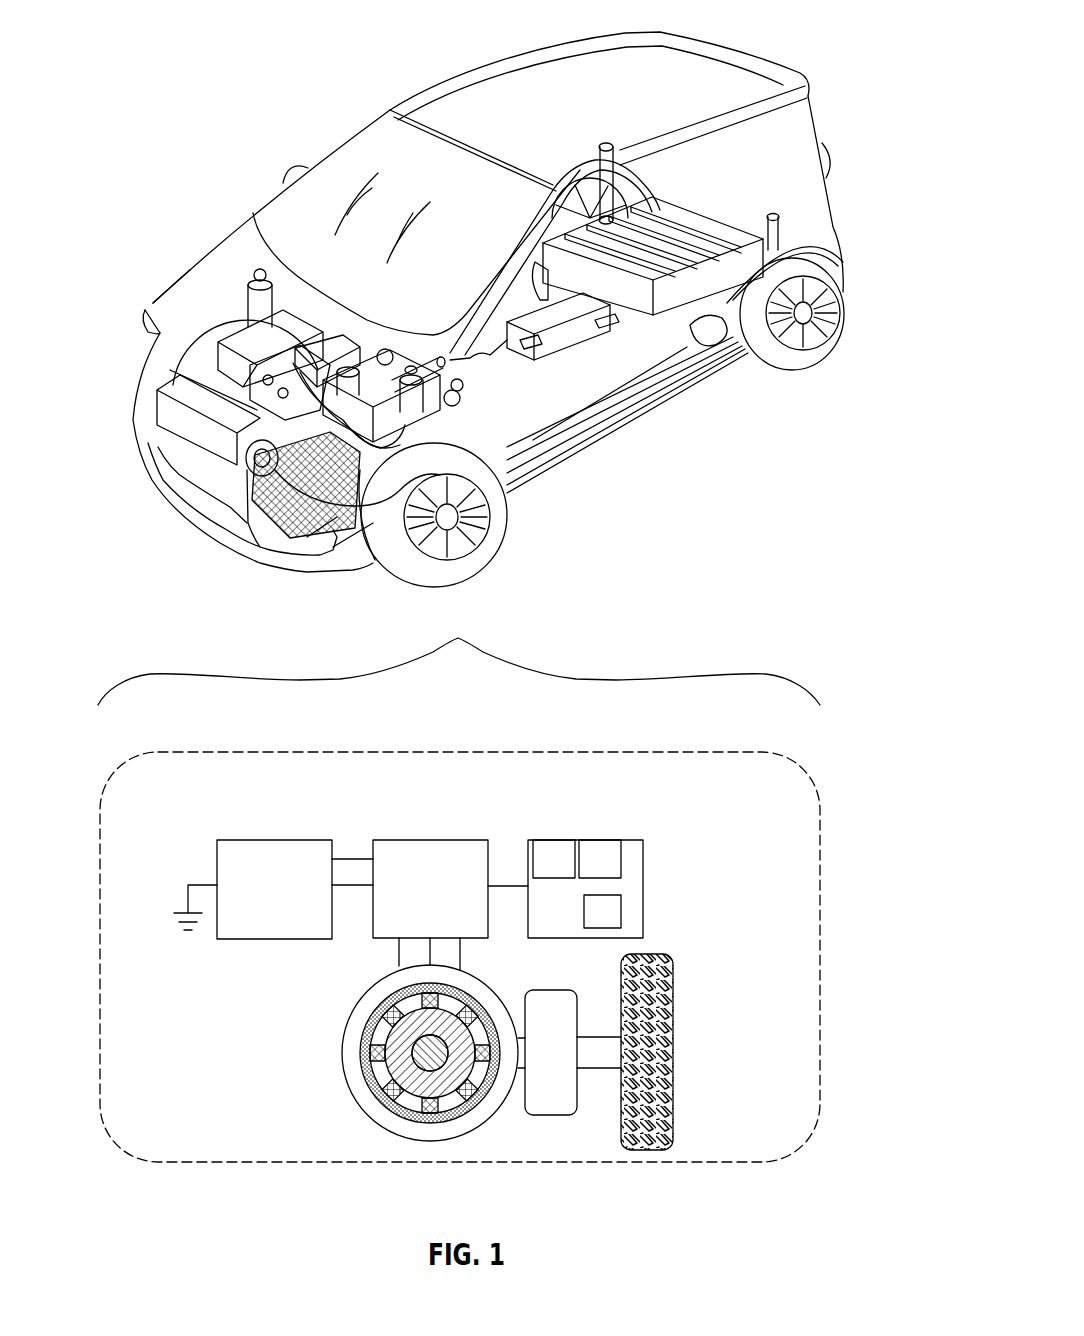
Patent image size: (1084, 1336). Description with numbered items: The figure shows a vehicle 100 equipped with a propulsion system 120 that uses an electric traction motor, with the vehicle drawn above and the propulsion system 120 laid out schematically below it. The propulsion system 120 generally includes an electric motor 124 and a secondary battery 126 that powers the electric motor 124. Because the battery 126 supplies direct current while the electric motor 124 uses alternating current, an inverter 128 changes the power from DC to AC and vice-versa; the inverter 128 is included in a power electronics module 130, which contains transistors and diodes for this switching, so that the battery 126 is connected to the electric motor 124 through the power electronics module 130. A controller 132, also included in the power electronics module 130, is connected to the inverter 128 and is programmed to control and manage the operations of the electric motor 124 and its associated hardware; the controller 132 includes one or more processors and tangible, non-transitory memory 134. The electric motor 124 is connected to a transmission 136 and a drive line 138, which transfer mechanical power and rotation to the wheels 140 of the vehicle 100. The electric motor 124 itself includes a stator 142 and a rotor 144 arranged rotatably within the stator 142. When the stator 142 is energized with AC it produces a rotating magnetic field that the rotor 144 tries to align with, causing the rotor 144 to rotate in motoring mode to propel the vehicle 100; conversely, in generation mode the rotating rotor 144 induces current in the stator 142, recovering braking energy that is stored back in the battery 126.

The vehicle 100 is at (778, 30).
The propulsion system 120 is at (820, 847).
The electric motor 124 is at (438, 840).
The secondary battery 126 is at (283, 840).
The inverter 128 is at (555, 850).
The power electronics module 130 is at (645, 863).
The controller 132 is at (595, 850).
The memory 134 is at (623, 910).
The transmission 136 is at (540, 1115).
The drive line 138 is at (613, 1068).
The wheels 140 is at (675, 1105).
The stator 142 is at (346, 1040).
The rotor 144 is at (370, 1065).